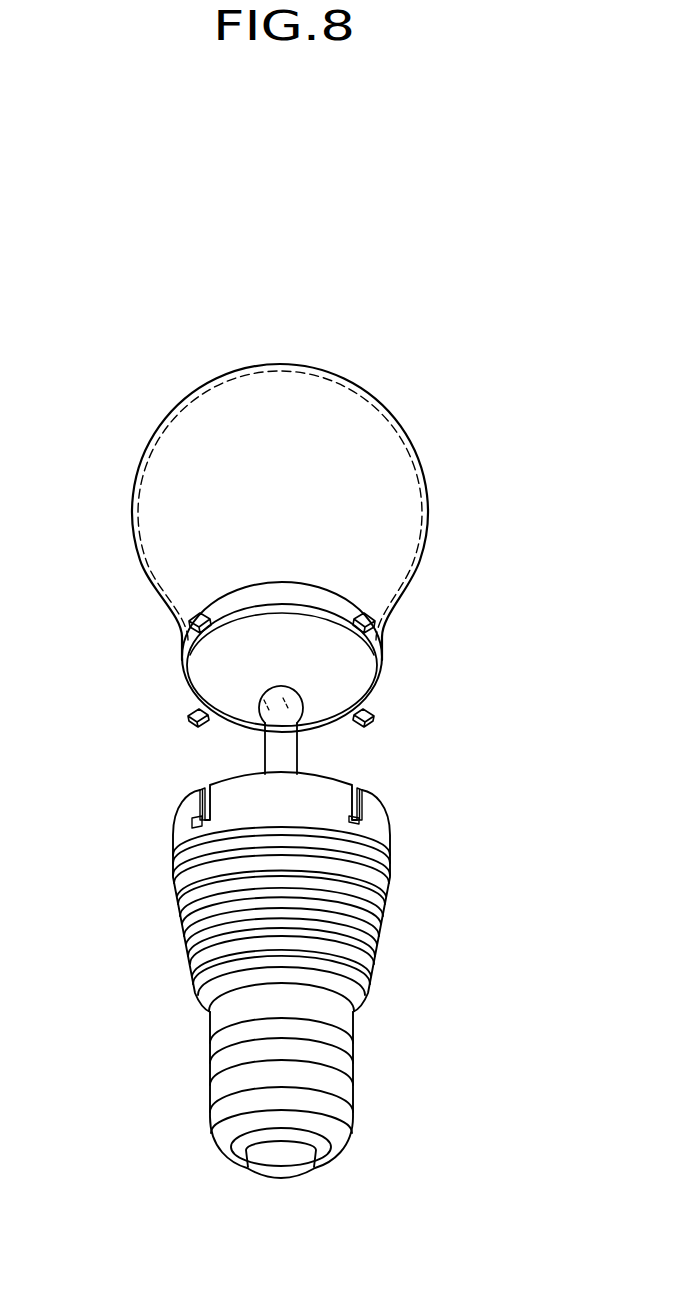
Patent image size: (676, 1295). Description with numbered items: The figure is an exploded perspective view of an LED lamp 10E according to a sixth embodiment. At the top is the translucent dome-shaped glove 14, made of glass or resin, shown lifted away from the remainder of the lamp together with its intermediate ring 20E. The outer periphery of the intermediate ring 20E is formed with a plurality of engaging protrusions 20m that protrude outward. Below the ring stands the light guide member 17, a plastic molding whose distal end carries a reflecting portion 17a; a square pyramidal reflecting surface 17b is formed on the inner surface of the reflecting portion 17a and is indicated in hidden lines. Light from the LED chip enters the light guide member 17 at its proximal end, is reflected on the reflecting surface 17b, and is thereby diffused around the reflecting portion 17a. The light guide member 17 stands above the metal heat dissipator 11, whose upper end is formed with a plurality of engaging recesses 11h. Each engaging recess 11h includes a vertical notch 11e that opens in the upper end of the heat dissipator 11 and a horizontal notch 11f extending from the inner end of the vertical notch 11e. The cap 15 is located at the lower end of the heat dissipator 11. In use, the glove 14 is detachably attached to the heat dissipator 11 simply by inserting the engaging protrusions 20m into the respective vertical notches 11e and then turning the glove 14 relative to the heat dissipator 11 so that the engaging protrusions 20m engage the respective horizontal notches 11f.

The LED lamp 10E is at (513, 488).
The glove 14 is at (370, 466).
The intermediate ring 20E is at (398, 649).
The engaging protrusions 20m is at (190, 716).
The reflecting portion 17a is at (259, 706).
The reflecting surface 17b is at (288, 707).
The light guide member 17 is at (277, 752).
The heat dissipator 11 is at (377, 930).
The engaging recesses 11h is at (209, 789).
The vertical notch 11e is at (202, 797).
The horizontal notch 11f is at (194, 824).
The cap 15 is at (343, 1075).